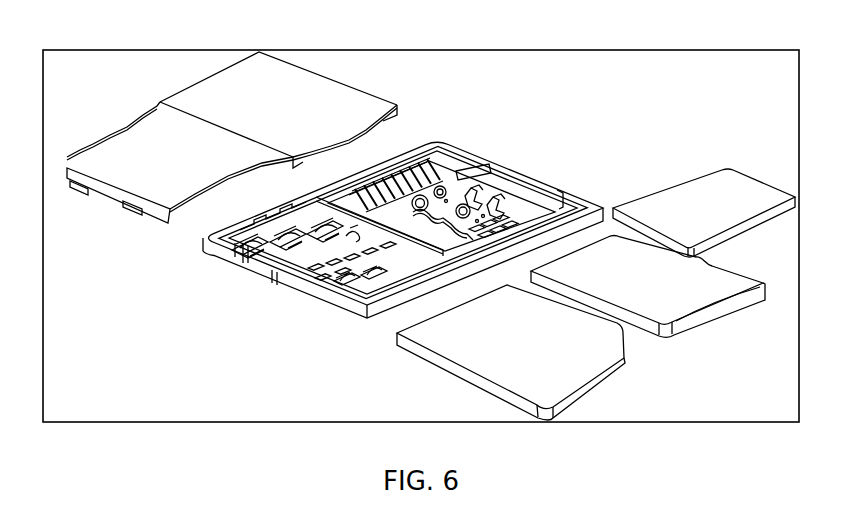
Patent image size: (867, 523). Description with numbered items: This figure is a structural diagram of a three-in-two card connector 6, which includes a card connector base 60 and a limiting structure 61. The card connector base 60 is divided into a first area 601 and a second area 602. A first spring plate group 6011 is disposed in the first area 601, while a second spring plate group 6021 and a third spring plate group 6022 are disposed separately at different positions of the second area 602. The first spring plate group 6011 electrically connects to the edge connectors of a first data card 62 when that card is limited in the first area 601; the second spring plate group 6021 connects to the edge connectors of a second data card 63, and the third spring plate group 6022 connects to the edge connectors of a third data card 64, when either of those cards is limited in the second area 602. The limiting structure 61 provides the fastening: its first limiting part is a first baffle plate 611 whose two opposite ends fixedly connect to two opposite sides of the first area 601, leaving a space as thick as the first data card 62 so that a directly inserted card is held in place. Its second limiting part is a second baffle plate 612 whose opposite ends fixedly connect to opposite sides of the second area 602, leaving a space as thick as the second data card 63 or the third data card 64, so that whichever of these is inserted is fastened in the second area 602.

The three-in-two card connector 6 is at (439, 41).
The card connector base 60 is at (471, 144).
The first area 601 is at (229, 249).
The first spring plate group 6011 is at (289, 268).
The second area 602 is at (513, 181).
The second spring plate group 6021 is at (419, 165).
The third spring plate group 6022 is at (510, 199).
The limiting structure 61 is at (141, 96).
The first baffle plate 611 is at (132, 182).
The second baffle plate 612 is at (313, 95).
The first data card 62 is at (574, 372).
The second data card 63 is at (705, 286).
The third data card 64 is at (703, 164).